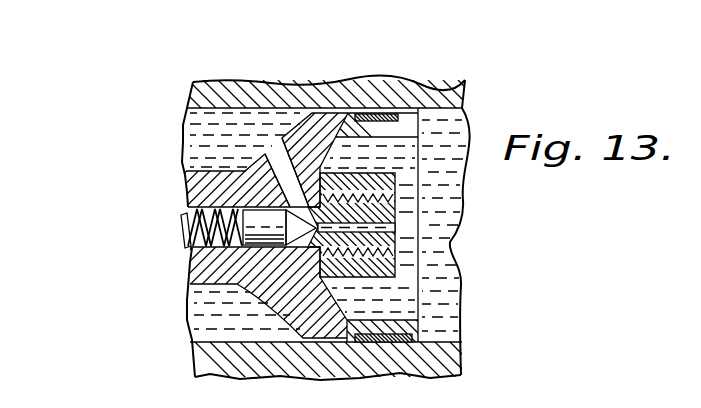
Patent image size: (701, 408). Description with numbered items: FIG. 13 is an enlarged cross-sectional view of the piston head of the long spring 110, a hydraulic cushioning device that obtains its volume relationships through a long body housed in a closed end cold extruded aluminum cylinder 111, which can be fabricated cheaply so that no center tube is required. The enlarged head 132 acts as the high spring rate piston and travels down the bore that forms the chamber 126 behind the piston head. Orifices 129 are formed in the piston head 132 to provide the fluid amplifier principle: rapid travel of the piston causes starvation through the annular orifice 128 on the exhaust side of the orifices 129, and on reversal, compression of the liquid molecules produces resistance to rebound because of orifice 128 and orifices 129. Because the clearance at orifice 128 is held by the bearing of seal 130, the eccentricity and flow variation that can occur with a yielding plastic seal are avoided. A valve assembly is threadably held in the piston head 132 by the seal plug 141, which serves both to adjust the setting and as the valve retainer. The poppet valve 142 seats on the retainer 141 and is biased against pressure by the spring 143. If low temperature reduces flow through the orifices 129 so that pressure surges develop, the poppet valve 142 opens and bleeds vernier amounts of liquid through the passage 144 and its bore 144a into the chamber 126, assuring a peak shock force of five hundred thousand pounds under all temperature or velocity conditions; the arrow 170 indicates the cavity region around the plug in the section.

The long spring 110 is at (548, 42).
The closed end cold extruded aluminum cylinder 111 is at (444, 80).
The chamber 126 is at (188, 121).
The annular orifice 128 is at (310, 112).
The orifices 129 is at (322, 108).
The seal 130 is at (383, 112).
The enlarged head 132 is at (270, 314).
The seal plug 141 is at (398, 242).
The poppet valve 142 is at (258, 212).
The spring 143 is at (186, 233).
The passage 144 is at (265, 152).
The bore 144a is at (400, 228).
The cavity 170 is at (428, 209).